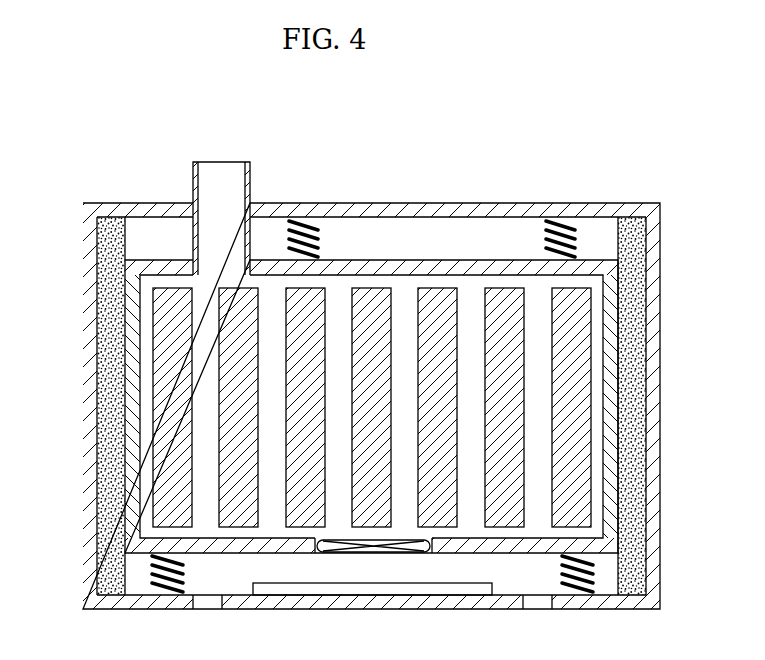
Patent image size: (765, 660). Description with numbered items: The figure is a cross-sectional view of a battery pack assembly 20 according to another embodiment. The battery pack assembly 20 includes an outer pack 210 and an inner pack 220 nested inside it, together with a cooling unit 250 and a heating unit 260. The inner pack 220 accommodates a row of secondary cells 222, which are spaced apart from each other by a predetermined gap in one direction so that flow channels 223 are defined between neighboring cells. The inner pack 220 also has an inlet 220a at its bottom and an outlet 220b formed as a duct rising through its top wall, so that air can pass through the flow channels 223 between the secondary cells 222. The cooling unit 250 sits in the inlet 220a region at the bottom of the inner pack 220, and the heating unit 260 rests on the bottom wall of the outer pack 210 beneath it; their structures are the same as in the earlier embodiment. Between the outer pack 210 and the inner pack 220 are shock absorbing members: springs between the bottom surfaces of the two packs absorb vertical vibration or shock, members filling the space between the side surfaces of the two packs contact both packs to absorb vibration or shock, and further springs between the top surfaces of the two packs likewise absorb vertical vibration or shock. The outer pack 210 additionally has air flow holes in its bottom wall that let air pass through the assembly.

The battery pack assembly 20 is at (608, 131).
The outer pack 210 is at (655, 238).
The inner pack 220 is at (610, 321).
The inlet 220a is at (313, 542).
The outlet 220b is at (222, 236).
The secondary cells 222 is at (520, 397).
The flow channels 223 is at (537, 473).
The cooling unit 250 is at (412, 544).
The heating unit 260 is at (473, 588).